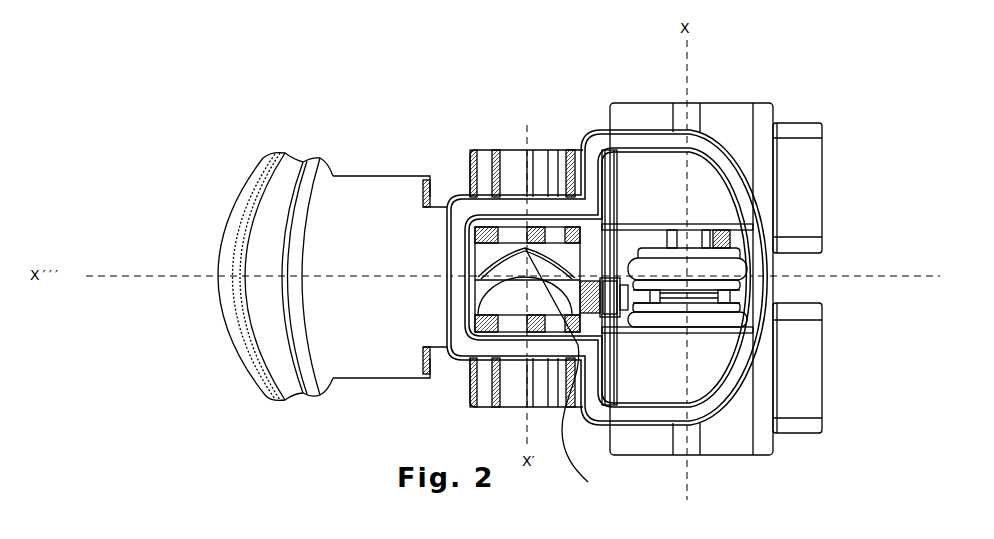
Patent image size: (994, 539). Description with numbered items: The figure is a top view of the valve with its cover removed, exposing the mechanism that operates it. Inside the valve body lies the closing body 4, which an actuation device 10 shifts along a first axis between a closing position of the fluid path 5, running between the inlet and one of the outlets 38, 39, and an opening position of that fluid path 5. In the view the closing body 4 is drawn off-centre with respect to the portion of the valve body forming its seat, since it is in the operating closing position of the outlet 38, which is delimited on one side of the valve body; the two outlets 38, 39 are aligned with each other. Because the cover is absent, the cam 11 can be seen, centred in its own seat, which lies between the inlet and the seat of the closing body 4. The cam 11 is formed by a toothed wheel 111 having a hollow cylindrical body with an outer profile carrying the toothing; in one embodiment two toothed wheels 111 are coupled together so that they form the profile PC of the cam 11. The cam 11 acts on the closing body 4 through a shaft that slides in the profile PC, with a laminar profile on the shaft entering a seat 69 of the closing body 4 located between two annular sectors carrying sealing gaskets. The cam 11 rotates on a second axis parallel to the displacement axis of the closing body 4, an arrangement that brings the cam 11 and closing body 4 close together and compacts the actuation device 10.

The actuation device 10 is at (466, 208).
The toothed wheel 111 is at (534, 264).
The cam 11 is at (493, 263).
The closing body 4 is at (644, 262).
The fluid path 5 is at (663, 241).
The seat 69 is at (730, 295).
The outlet 39 is at (790, 160).
The outlet 38 is at (808, 338).
The profile of the cam PC is at (570, 371).